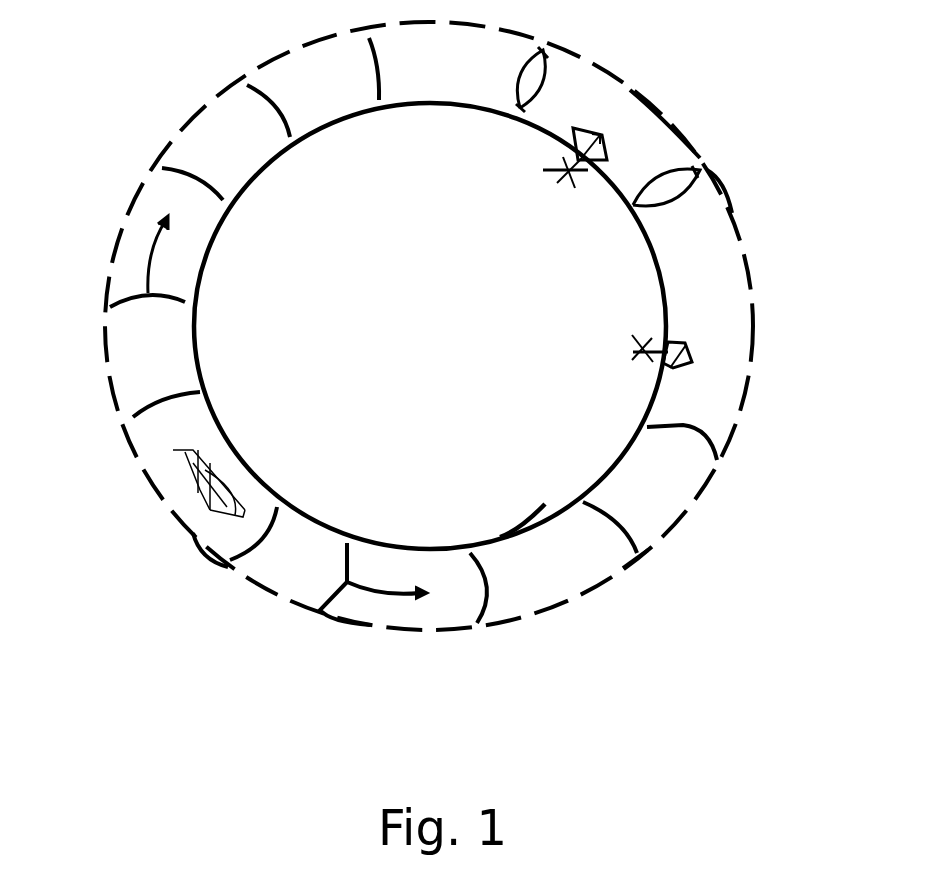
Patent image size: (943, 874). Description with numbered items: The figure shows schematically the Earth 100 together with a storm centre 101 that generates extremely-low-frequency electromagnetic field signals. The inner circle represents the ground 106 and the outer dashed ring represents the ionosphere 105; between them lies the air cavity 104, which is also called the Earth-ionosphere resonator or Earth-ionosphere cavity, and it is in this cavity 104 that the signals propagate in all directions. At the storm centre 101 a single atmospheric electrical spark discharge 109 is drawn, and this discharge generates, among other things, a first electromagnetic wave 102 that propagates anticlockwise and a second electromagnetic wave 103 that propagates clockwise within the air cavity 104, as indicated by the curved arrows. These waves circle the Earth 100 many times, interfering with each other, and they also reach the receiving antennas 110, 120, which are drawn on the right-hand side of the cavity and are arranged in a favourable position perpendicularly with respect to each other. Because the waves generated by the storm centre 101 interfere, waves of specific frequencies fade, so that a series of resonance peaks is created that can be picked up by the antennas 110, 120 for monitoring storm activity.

The Earth 100 is at (350, 213).
The storm centre 101 is at (207, 503).
The first electromagnetic wave 102 is at (340, 585).
The second electromagnetic wave 103 is at (140, 293).
The air cavity 104 is at (658, 502).
The ionosphere 105 is at (670, 560).
The ground 106 is at (537, 508).
The atmospheric electrical spark discharge 109 is at (233, 463).
The receiving antenna 110 is at (655, 340).
The receiving antenna 120 is at (590, 167).